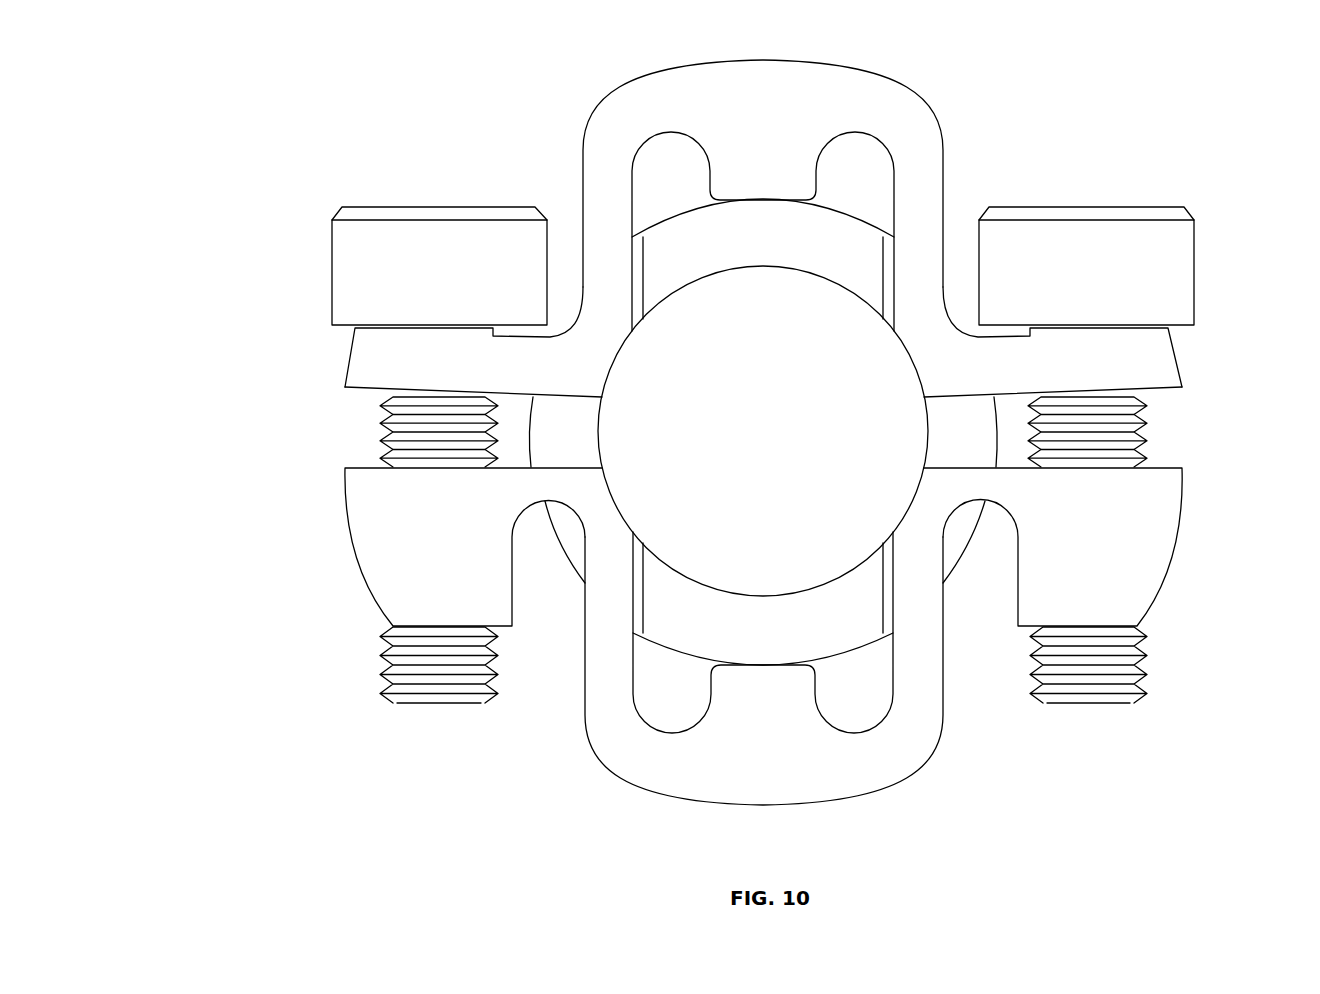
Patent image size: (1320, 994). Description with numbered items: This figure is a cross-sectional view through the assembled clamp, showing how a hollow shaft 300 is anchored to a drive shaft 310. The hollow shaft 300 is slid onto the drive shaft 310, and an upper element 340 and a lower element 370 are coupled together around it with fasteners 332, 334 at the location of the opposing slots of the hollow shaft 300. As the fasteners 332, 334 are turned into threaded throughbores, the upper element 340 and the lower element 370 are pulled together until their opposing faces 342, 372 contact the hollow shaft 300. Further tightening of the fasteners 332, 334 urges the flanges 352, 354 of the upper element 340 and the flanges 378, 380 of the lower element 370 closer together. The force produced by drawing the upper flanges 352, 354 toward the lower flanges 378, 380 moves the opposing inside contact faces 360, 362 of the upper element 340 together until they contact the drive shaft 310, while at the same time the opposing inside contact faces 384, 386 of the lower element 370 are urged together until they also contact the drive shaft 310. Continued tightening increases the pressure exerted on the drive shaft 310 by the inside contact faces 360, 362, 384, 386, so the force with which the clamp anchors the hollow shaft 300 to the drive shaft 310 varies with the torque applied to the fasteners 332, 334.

The hollow shaft 300 is at (823, 635).
The drive shaft 310 is at (790, 440).
The fastener 332 is at (1140, 262).
The fastener 334 is at (458, 275).
The upper element 340 is at (918, 100).
The opposing face 342 is at (752, 200).
The flange 352 is at (1130, 360).
The flange 354 is at (380, 358).
The inside contact face 360 is at (914, 363).
The inside contact face 362 is at (611, 368).
The lower element 370 is at (905, 772).
The opposing face 372 is at (758, 660).
The flange 378 is at (1127, 558).
The flange 380 is at (390, 558).
The inside contact face 384 is at (915, 495).
The inside contact face 386 is at (617, 508).